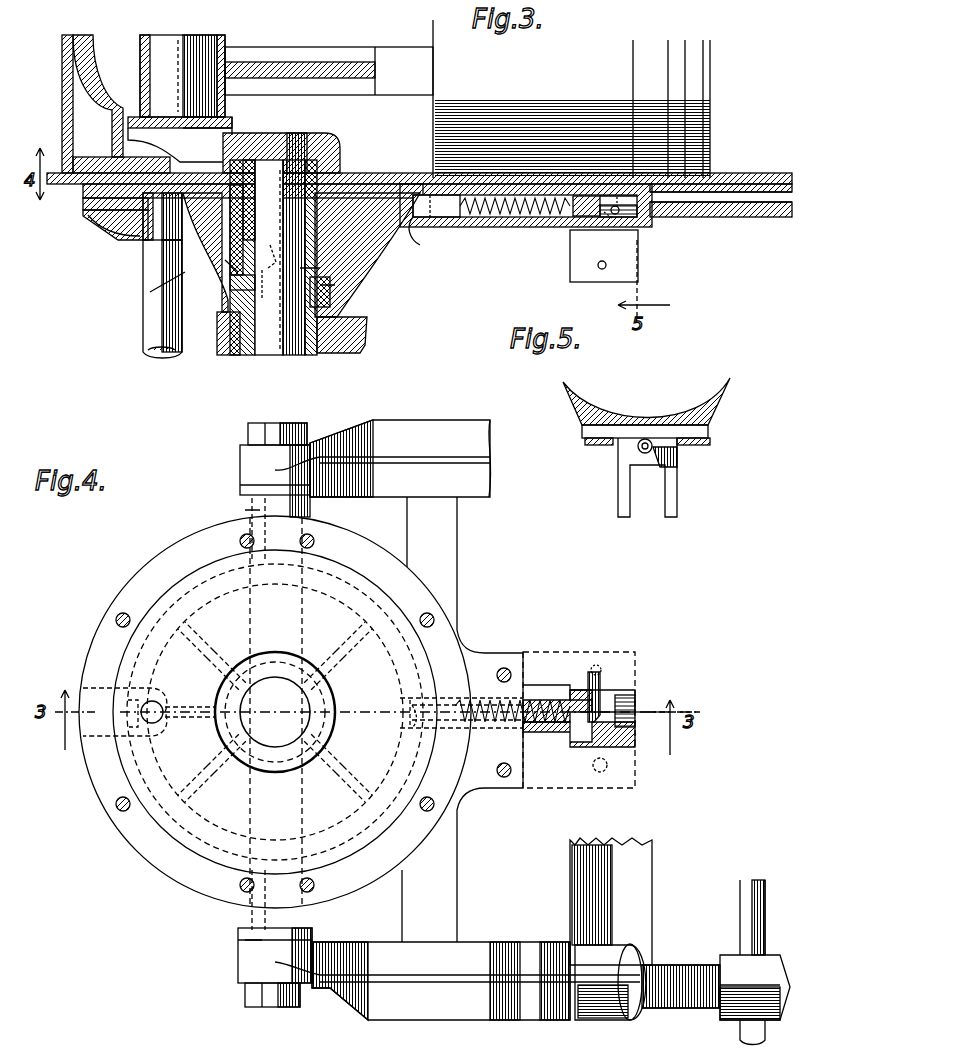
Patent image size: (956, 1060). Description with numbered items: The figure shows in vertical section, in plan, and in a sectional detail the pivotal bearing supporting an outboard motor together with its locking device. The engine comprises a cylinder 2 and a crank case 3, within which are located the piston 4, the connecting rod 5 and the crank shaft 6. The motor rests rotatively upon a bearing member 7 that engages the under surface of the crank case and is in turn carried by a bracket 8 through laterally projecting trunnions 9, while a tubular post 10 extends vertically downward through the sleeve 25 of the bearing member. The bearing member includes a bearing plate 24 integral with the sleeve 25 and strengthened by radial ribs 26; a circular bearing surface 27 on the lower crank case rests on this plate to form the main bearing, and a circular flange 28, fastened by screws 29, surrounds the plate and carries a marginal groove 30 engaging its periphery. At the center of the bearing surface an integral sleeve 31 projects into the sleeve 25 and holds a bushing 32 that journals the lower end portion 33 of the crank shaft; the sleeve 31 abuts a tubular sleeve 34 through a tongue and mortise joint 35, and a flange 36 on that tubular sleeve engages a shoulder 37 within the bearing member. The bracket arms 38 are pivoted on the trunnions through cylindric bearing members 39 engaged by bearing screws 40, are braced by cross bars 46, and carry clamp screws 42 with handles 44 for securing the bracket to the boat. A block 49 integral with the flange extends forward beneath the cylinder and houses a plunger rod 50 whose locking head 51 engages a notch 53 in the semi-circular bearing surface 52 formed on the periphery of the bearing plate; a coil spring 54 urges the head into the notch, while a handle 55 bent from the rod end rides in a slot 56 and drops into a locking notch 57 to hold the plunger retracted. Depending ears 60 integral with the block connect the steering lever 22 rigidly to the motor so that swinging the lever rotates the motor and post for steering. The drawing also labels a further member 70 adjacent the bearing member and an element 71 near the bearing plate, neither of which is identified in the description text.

In FIG. 3, the cylinder 2 is at (735, 214).
In FIG. 5, the cylinder 2 is at (648, 418).
In FIG. 3, the crank case 3 is at (100, 92).
In FIG. 3, the piston 4 is at (700, 108).
In FIG. 3, the connecting rod 5 is at (329, 71).
In FIG. 3, the crank shaft 6 is at (180, 81).
In FIG. 3, the bearing member 7 is at (199, 250).
In FIG. 4, the bracket 8 is at (463, 420).
In FIG. 4, the trunnions 9 is at (244, 509).
In FIG. 3, the tubular casing or post 10 is at (238, 352).
In FIG. 3, the steering lever 22 is at (367, 333).
In FIG. 3, the bearing plate 24 is at (138, 212).
In FIG. 3, the sleeve 25 is at (222, 312).
In FIG. 3, the ribs or flanges 26 is at (228, 268).
In FIG. 4, the ribs or flanges 26 is at (345, 768).
In FIG. 3, the bearing surface 27 is at (200, 182).
In FIG. 4, the circular flange 28 is at (150, 574).
In FIG. 4, the screws 29 is at (312, 536).
In FIG. 3, the marginal groove 30 is at (135, 193).
In FIG. 3, the sleeve 31 is at (372, 288).
In FIG. 3, the bushing 32 is at (245, 222).
In FIG. 3, the lower end portion of the crank shaft 33 is at (252, 190).
In FIG. 3, the tubular sleeve 34 is at (258, 340).
In FIG. 3, the tongue and mortise joint 35 is at (273, 261).
In FIG. 3, the flange 36 is at (230, 290).
In FIG. 3, the shoulder 37 is at (332, 300).
In FIG. 4, the arms 38 is at (410, 420).
In FIG. 4, the cylindric bearing members 39 is at (248, 460).
In FIG. 4, the bearing screws 40 is at (285, 437).
In FIG. 4, the clamp screws 42 is at (690, 960).
In FIG. 4, the handles 44 is at (755, 880).
In FIG. 4, the cross bars 46 is at (466, 545).
In FIG. 3, the block 49 is at (495, 236).
In FIG. 5, the block 49 is at (609, 464).
In FIG. 4, the block 49 is at (512, 797).
In FIG. 3, the plunger rod 50 is at (580, 218).
In FIG. 4, the plunger rod 50 is at (538, 700).
In FIG. 3, the locking head 51 is at (440, 210).
In FIG. 4, the locking head 51 is at (440, 712).
In FIG. 4, the semi-circular bearing surface 52 is at (412, 608).
In FIG. 3, the notch 53 is at (418, 225).
In FIG. 4, the notch 53 is at (427, 730).
In FIG. 3, the coil spring 54 is at (535, 215).
In FIG. 4, the coil spring 54 is at (540, 722).
In FIG. 3, the handle 55 is at (600, 232).
In FIG. 5, the handle 55 is at (652, 450).
In FIG. 4, the handle 55 is at (605, 680).
In FIG. 3, the slot 56 is at (625, 217).
In FIG. 4, the slot 56 is at (628, 698).
In FIG. 5, the locking notch 57 is at (672, 460).
In FIG. 4, the locking notch 57 is at (645, 702).
In FIG. 3, the depending ears 60 is at (575, 258).
In FIG. 5, the depending ears 60 is at (628, 498).
In FIG. 3, the rod 70 is at (146, 330).
In FIG. 3, the boss 71 is at (142, 212).
In FIG. 4, the boss 71 is at (160, 730).